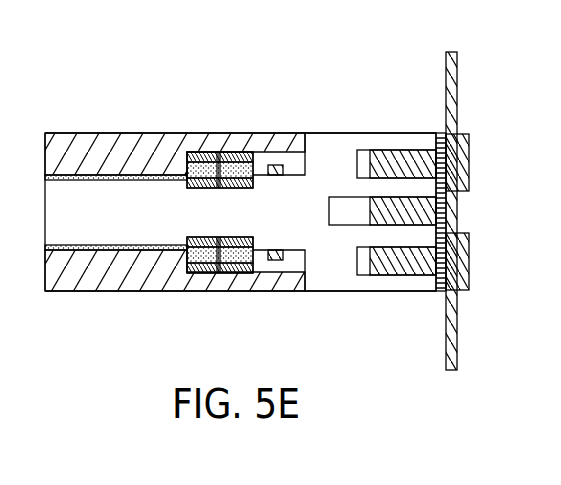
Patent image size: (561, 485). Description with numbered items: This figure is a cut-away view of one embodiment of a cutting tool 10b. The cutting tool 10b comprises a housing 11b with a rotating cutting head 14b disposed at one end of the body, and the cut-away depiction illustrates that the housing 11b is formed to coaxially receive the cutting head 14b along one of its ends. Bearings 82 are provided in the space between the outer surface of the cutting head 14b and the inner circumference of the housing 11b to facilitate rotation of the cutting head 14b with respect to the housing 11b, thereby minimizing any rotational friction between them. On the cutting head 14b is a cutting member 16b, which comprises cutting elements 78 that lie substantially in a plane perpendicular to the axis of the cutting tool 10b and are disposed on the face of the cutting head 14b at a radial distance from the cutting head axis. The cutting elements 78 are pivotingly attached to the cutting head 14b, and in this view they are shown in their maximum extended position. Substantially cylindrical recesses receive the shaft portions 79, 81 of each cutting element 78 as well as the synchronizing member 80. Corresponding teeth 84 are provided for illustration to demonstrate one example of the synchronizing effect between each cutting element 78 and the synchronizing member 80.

The cutting tool 10b is at (137, 118).
The housing 11b is at (77, 277).
The cutting head 14b is at (330, 160).
The cutting member 16b is at (470, 116).
The cutting elements 78 is at (452, 70).
The shaft portion 79 is at (388, 162).
The synchronizing member 80 is at (447, 205).
The shaft portion 81 is at (398, 212).
The bearings 82 is at (207, 190).
The teeth 84 is at (440, 152).